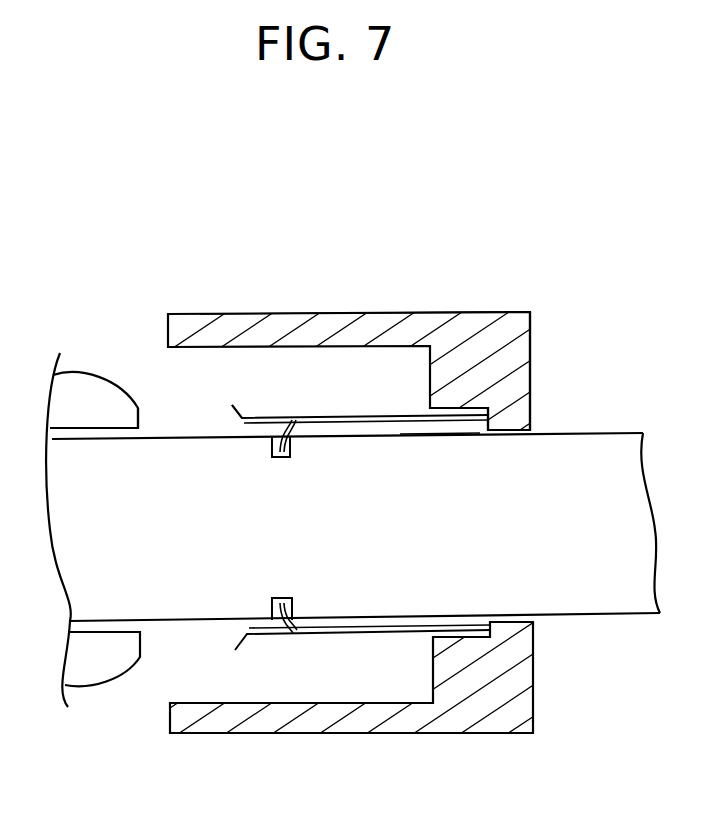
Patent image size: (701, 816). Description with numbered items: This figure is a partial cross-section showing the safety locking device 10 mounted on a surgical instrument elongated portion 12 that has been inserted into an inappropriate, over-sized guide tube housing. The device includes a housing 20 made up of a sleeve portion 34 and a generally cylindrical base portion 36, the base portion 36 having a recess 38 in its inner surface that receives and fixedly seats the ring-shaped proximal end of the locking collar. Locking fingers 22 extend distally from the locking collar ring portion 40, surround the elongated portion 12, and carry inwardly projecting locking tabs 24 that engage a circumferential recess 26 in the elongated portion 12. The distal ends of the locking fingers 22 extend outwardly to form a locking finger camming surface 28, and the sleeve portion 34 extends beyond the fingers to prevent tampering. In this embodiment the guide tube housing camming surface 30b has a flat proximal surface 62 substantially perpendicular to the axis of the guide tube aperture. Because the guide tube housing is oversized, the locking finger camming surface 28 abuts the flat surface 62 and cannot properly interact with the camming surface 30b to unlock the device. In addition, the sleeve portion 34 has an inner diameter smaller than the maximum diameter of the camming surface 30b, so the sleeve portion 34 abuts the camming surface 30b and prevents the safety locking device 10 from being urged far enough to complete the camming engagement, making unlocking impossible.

The safety locking device 10 is at (536, 226).
The surgical instrument elongated portion 12 is at (353, 530).
The housing 20 is at (360, 508).
The locking fingers 22 is at (361, 509).
The locking tabs 24 is at (257, 526).
The circumferential recess 26 is at (307, 477).
The locking finger camming surface 28 is at (192, 445).
The guide tube housing camming surface 30b is at (95, 501).
The sleeve portion 34 is at (350, 293).
The base portion 36 is at (577, 355).
The recess 38 is at (475, 397).
The locking collar ring portion 40 is at (429, 456).
The flat proximal surface 62 is at (169, 397).